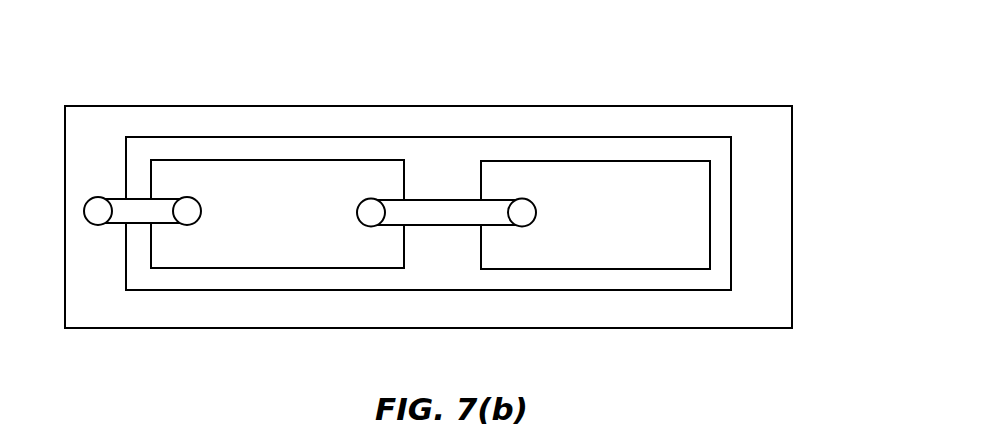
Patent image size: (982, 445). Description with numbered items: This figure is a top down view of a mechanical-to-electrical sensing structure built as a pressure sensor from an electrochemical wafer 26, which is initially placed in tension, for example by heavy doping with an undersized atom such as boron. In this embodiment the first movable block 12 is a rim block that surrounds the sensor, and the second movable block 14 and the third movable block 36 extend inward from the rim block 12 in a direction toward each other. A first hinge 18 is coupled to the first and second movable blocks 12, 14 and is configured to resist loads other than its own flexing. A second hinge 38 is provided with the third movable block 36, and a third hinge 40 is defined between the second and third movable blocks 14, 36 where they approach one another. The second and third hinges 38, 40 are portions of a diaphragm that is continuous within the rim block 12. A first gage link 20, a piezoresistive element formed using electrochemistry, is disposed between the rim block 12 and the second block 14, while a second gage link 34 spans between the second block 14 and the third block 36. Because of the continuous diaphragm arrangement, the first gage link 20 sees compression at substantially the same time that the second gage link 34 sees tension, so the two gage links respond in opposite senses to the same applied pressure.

The first movable block 12 is at (463, 325).
The second movable block 14 is at (294, 227).
The first hinge 18 is at (112, 142).
The first gage link 20 is at (144, 214).
The electrochemical wafer 26 is at (470, 217).
The second gage link 34 is at (426, 217).
The third movable block 36 is at (612, 232).
The second hinge 38 is at (778, 193).
The third hinge 40 is at (463, 175).